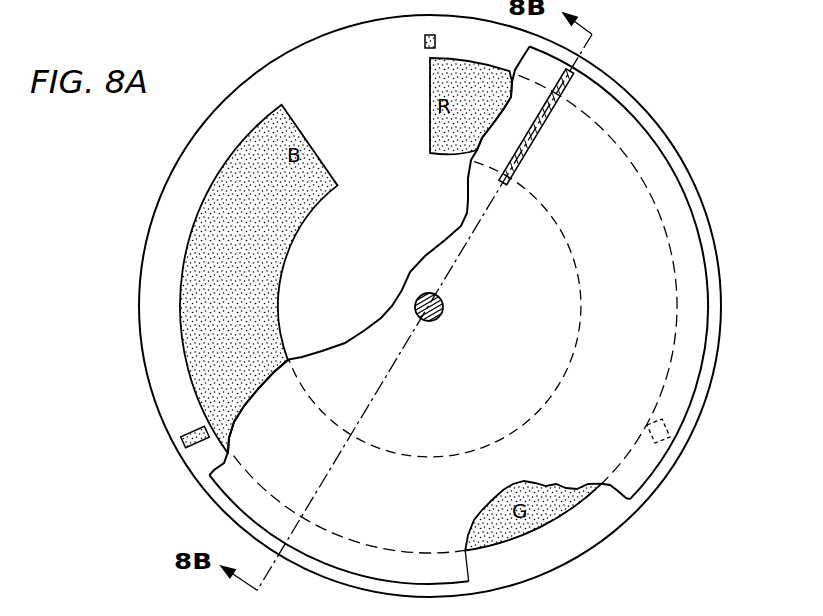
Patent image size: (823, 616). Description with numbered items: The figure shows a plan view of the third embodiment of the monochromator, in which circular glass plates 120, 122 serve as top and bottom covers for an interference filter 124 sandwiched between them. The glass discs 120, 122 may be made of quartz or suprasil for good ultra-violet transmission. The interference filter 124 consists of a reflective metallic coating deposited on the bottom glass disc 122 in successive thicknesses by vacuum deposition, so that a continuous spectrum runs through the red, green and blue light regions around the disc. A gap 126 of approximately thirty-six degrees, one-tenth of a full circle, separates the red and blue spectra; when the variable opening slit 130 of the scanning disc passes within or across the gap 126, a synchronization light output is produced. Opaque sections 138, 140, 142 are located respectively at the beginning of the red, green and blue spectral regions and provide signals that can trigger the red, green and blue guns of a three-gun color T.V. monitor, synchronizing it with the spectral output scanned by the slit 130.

The circular glass plate 120 is at (687, 367).
The circular glass plate 122 is at (720, 340).
The interference filter 124 is at (625, 240).
The gap 126 is at (383, 120).
The variable opening slit 130 is at (574, 83).
The opaque section 138 is at (435, 42).
The opaque section 140 is at (677, 427).
The opaque section 142 is at (186, 433).